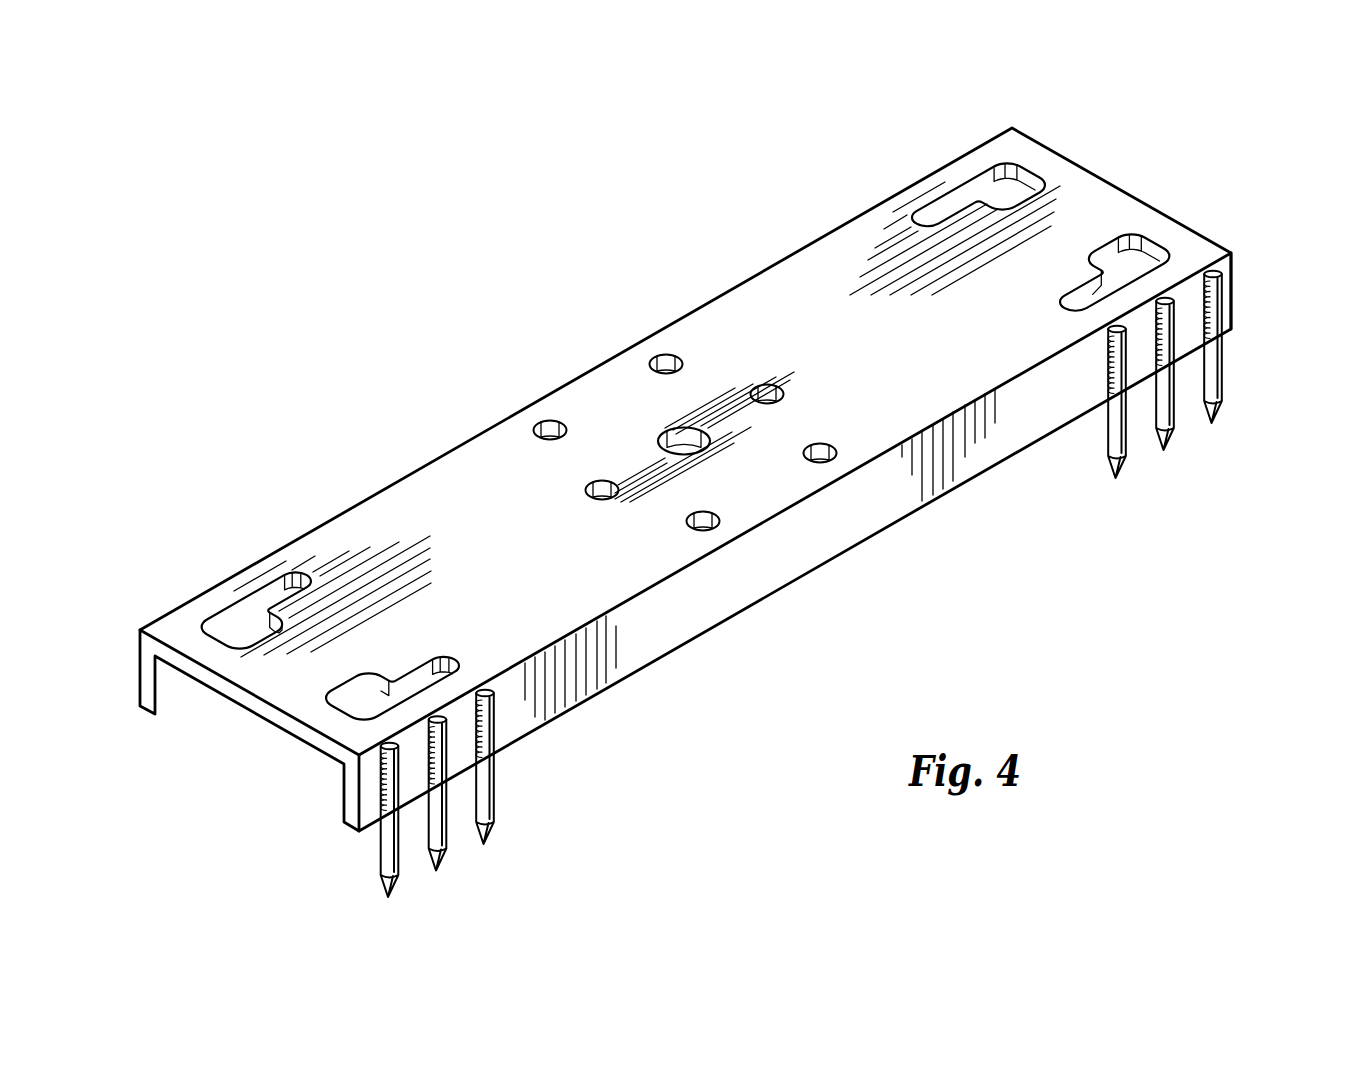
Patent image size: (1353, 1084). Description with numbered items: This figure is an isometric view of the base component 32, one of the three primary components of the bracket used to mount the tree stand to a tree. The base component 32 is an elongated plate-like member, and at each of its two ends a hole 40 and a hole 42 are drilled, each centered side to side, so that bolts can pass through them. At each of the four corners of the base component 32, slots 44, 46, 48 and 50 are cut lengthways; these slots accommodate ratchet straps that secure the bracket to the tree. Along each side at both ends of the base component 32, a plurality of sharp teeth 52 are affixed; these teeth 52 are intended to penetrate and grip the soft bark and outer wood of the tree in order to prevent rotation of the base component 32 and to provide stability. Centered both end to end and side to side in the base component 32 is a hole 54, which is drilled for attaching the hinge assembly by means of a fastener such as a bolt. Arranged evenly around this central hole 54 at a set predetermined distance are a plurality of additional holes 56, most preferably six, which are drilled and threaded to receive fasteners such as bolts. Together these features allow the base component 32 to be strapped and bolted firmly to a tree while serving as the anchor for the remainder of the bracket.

The base component 32 is at (385, 421).
The hole 40 is at (282, 672).
The hole 42 is at (1077, 198).
The slot 44 is at (234, 605).
The slot 46 is at (345, 688).
The slot 48 is at (1022, 182).
The slot 50 is at (1143, 243).
The sharp teeth 52 is at (392, 884).
The hole 54 is at (667, 433).
The additional holes 56 is at (666, 355).